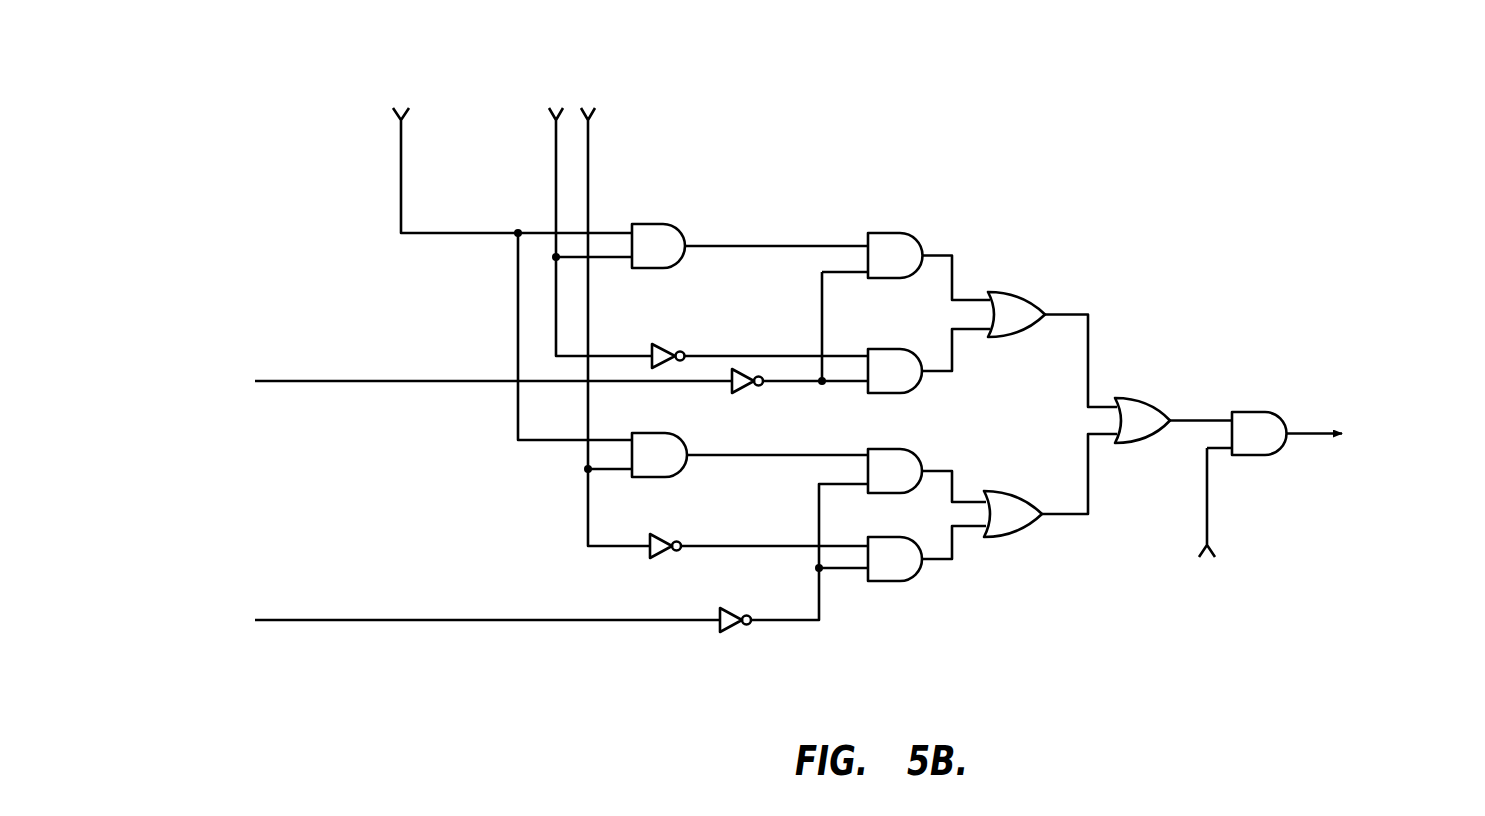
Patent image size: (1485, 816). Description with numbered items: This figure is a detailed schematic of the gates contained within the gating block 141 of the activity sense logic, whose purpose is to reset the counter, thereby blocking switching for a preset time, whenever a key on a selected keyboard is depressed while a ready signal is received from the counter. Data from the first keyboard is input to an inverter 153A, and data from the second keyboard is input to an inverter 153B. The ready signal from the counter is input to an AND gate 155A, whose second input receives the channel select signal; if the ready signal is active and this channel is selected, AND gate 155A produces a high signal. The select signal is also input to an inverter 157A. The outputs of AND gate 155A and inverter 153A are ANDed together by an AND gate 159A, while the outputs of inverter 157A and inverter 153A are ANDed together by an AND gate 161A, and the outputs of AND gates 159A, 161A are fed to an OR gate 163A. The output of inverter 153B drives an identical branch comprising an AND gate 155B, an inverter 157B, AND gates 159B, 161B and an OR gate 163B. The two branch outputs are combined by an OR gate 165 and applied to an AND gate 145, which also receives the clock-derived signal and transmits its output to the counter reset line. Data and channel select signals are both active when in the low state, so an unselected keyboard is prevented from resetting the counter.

The gating block 141 is at (1038, 152).
The AND gate 145 is at (1262, 412).
The inverter 153A is at (746, 394).
The inverter 153B is at (729, 610).
The AND gate 155A is at (661, 224).
The AND gate 155B is at (655, 433).
The inverter 157A is at (664, 345).
The inverter gate 157B is at (663, 536).
The AND gate 159A is at (900, 233).
The AND gate 159B is at (900, 449).
The AND gate 161A is at (886, 349).
The AND gate 161B is at (890, 537).
The OR gate 163A is at (1029, 294).
The OR gate 163B is at (1020, 493).
The OR gate 165 is at (1152, 404).